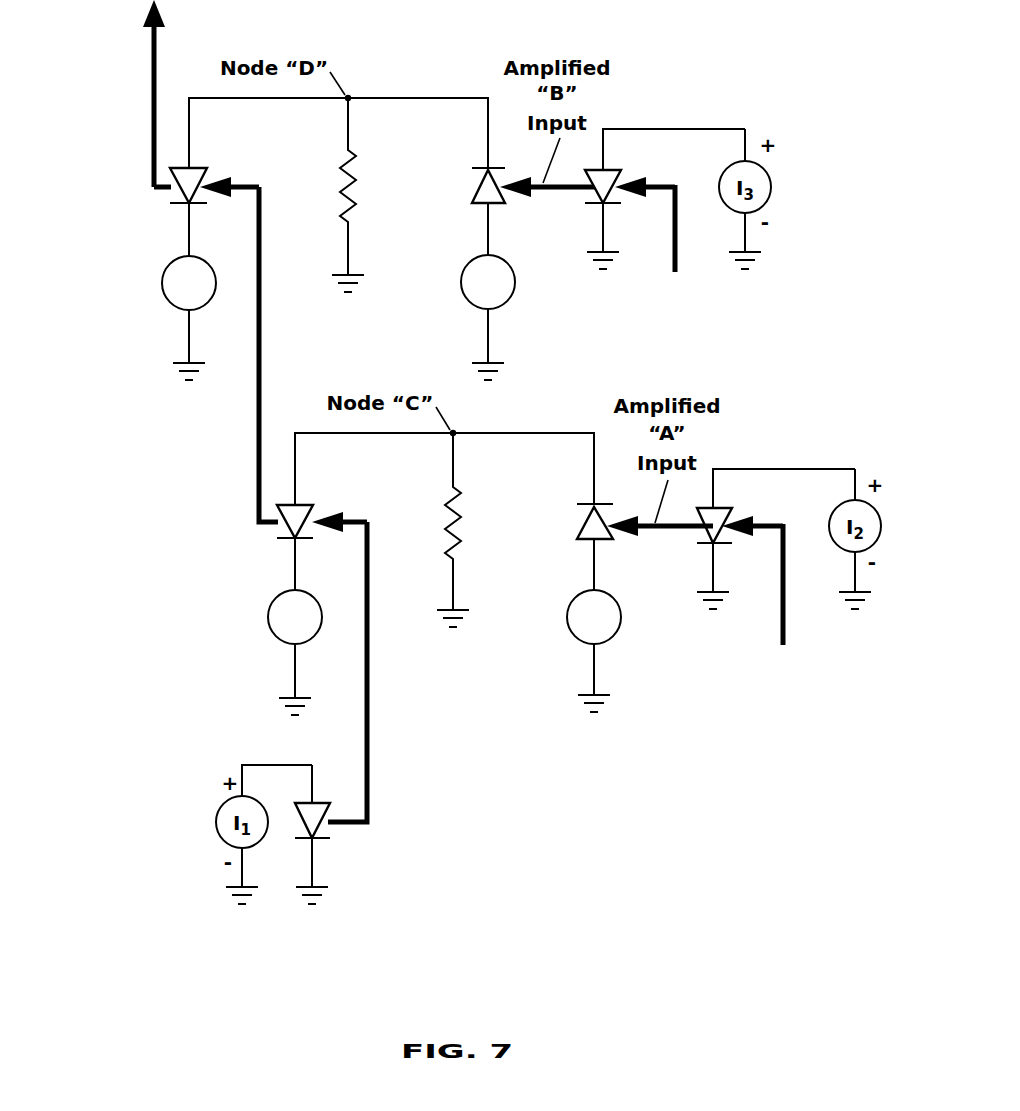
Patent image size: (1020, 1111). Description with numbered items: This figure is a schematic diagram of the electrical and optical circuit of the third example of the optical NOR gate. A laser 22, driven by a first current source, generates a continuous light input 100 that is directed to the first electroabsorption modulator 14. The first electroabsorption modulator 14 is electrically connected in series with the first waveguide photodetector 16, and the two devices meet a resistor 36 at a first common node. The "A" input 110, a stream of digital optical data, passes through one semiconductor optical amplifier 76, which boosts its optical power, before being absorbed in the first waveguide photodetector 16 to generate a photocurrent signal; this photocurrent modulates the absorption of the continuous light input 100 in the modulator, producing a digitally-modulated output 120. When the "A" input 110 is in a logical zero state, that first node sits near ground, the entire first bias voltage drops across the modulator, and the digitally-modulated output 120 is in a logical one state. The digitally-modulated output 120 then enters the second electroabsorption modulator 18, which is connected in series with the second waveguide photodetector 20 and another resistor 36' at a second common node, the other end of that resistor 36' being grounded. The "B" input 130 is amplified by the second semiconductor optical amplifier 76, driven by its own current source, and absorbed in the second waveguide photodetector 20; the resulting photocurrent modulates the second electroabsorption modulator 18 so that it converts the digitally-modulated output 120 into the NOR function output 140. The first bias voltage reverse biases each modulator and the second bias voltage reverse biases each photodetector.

The NOR function digital optical output 140 is at (150, 91).
The second electroabsorption modulator 18 is at (163, 204).
The digitally-modulated output 120 is at (257, 393).
The resistor 36' is at (392, 195).
The second waveguide photodetector 20 is at (475, 181).
The semiconductor optical amplifier 76 is at (587, 195).
The "B" input 130 is at (659, 266).
The first electroabsorption modulator 14 is at (270, 538).
The continuous light input 100 is at (367, 680).
The resistor 36 is at (498, 530).
The first waveguide photodetector 16 is at (577, 519).
The "A" input 110 is at (768, 624).
The laser 22 is at (337, 840).